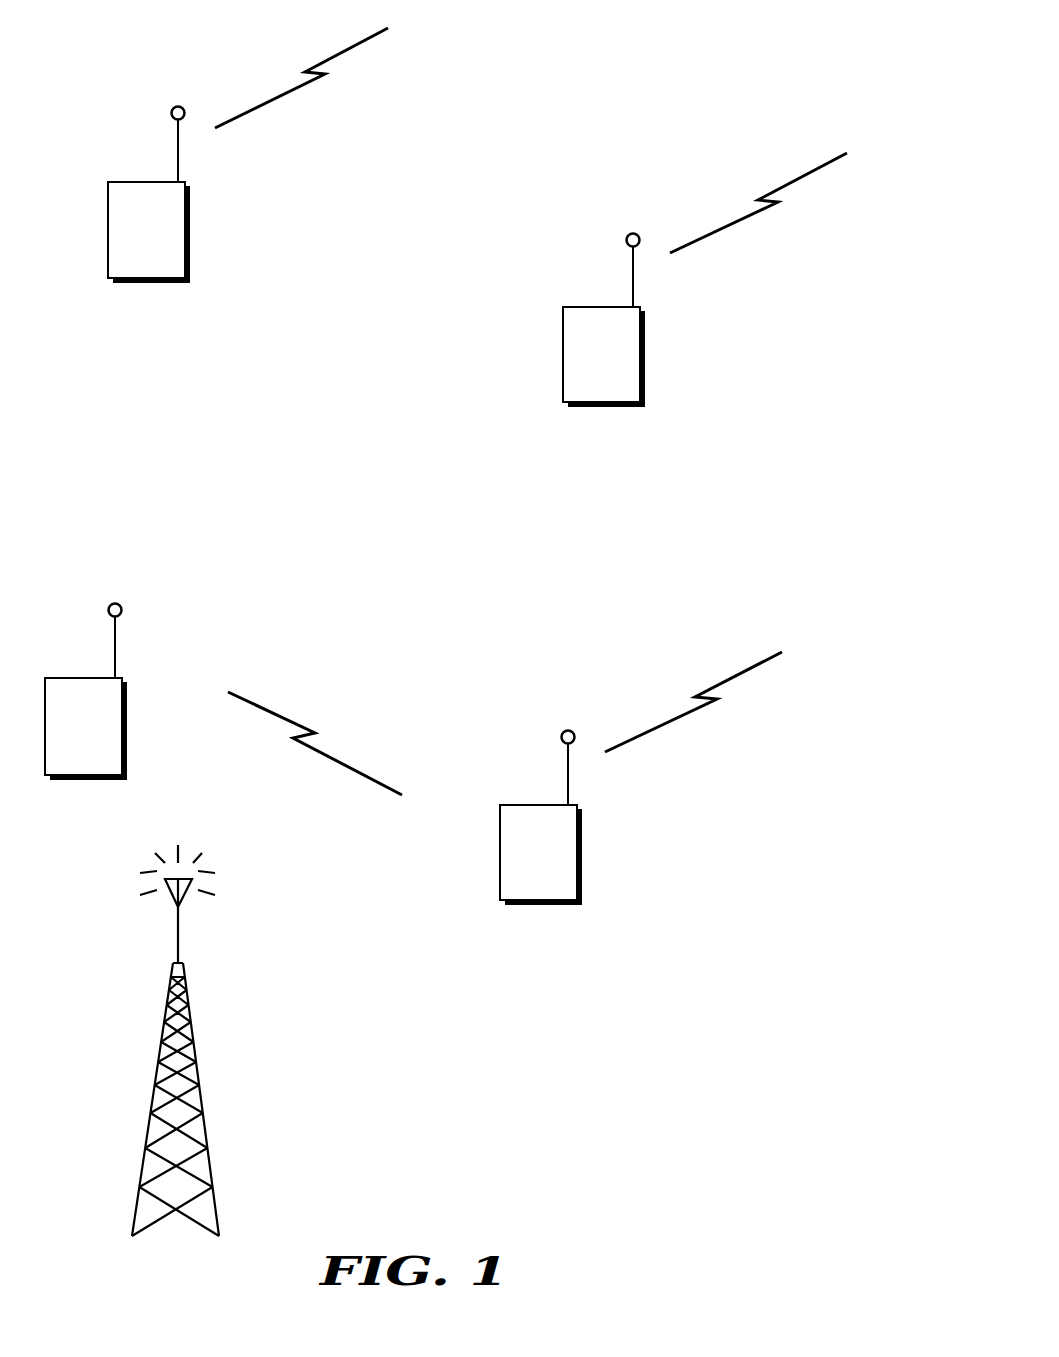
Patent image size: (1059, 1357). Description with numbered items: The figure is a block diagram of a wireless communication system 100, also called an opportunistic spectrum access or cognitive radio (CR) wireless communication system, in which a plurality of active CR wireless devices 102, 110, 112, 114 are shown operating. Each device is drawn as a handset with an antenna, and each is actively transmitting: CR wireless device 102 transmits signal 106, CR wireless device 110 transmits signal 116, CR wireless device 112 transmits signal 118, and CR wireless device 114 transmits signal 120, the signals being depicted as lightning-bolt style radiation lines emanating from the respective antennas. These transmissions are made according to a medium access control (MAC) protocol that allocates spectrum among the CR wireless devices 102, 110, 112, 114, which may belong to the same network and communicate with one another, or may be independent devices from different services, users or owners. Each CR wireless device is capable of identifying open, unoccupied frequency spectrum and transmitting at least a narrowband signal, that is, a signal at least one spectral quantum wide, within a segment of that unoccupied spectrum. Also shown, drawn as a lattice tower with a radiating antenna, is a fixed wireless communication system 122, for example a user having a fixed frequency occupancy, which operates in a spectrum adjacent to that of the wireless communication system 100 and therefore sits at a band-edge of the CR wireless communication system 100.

The wireless communication system 100 is at (95, 30).
The cognitive radio wireless device 102 is at (128, 182).
The signal 106 is at (318, 65).
The cognitive radio wireless device 110 is at (62, 678).
The cognitive radio wireless device 112 is at (520, 805).
The cognitive radio wireless device 114 is at (582, 307).
The signal 116 is at (287, 718).
The signal 118 is at (732, 673).
The signal 120 is at (777, 186).
The fixed wireless communication system 122 is at (155, 1074).